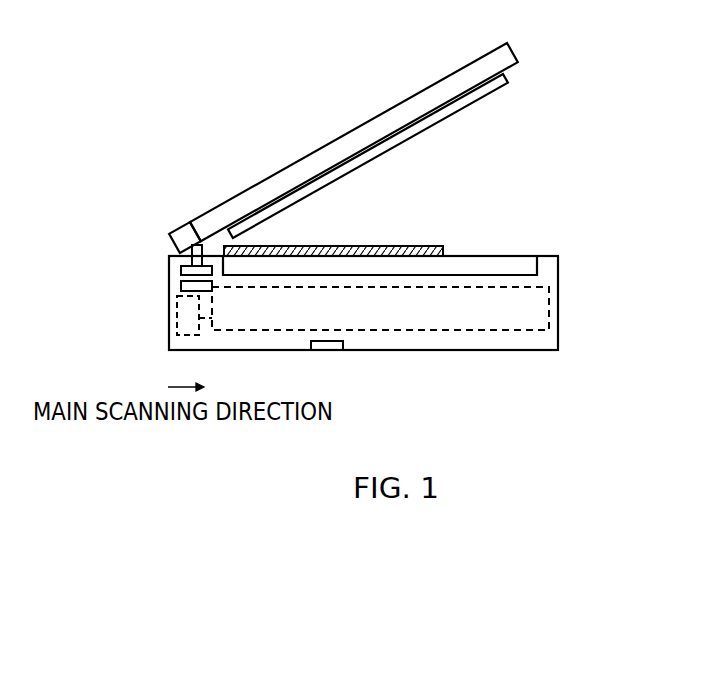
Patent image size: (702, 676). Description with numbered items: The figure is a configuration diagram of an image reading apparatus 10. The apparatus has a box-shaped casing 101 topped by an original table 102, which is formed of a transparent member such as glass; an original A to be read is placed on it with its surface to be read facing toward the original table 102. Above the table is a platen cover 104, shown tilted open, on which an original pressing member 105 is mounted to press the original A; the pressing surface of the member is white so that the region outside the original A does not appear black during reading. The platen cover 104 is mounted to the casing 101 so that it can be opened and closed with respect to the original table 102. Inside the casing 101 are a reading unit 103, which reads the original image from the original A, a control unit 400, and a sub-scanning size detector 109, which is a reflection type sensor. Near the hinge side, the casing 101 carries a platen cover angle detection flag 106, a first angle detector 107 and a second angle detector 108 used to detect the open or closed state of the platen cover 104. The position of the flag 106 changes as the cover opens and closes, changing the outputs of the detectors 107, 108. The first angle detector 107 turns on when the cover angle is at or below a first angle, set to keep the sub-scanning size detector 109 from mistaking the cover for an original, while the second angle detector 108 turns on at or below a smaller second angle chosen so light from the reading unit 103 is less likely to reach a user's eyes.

The image reading apparatus 10 is at (262, 132).
The casing 101 is at (523, 350).
The original table 102 is at (538, 258).
The reading unit 103 is at (553, 323).
The platen cover 104 is at (240, 193).
The original pressing member 105 is at (347, 168).
The platen cover angle detection flag 106 is at (186, 231).
The first angle detector 107 is at (180, 267).
The second angle detector 108 is at (180, 284).
The sub-scanning size detector 109 is at (345, 352).
The control unit 400 is at (172, 338).
The original A is at (428, 246).